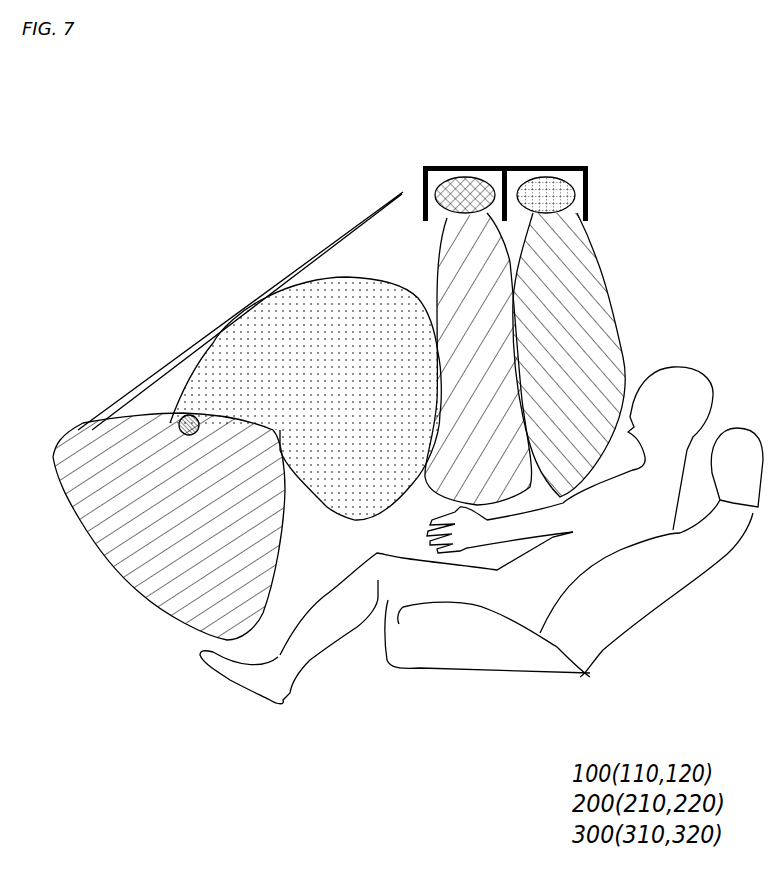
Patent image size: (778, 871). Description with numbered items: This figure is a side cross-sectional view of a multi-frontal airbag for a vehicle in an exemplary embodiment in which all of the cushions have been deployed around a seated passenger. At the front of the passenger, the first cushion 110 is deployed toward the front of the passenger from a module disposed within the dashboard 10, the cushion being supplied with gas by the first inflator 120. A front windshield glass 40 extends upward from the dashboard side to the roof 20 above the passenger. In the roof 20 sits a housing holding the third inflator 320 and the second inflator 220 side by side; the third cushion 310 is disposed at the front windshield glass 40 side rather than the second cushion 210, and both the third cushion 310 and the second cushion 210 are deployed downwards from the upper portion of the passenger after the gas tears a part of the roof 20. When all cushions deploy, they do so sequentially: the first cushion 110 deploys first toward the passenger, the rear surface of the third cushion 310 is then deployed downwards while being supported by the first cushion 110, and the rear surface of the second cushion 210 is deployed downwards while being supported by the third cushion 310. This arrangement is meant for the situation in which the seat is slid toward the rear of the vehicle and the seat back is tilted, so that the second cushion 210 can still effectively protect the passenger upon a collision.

The dashboard 10 is at (128, 550).
The roof 20 is at (563, 168).
The front windshield glass 40 is at (253, 307).
The first cushion 110 is at (303, 320).
The first inflator 120 is at (190, 418).
The second cushion 210 is at (592, 320).
The second inflator 220 is at (563, 193).
The third cushion 310 is at (487, 270).
The third inflator 320 is at (470, 190).